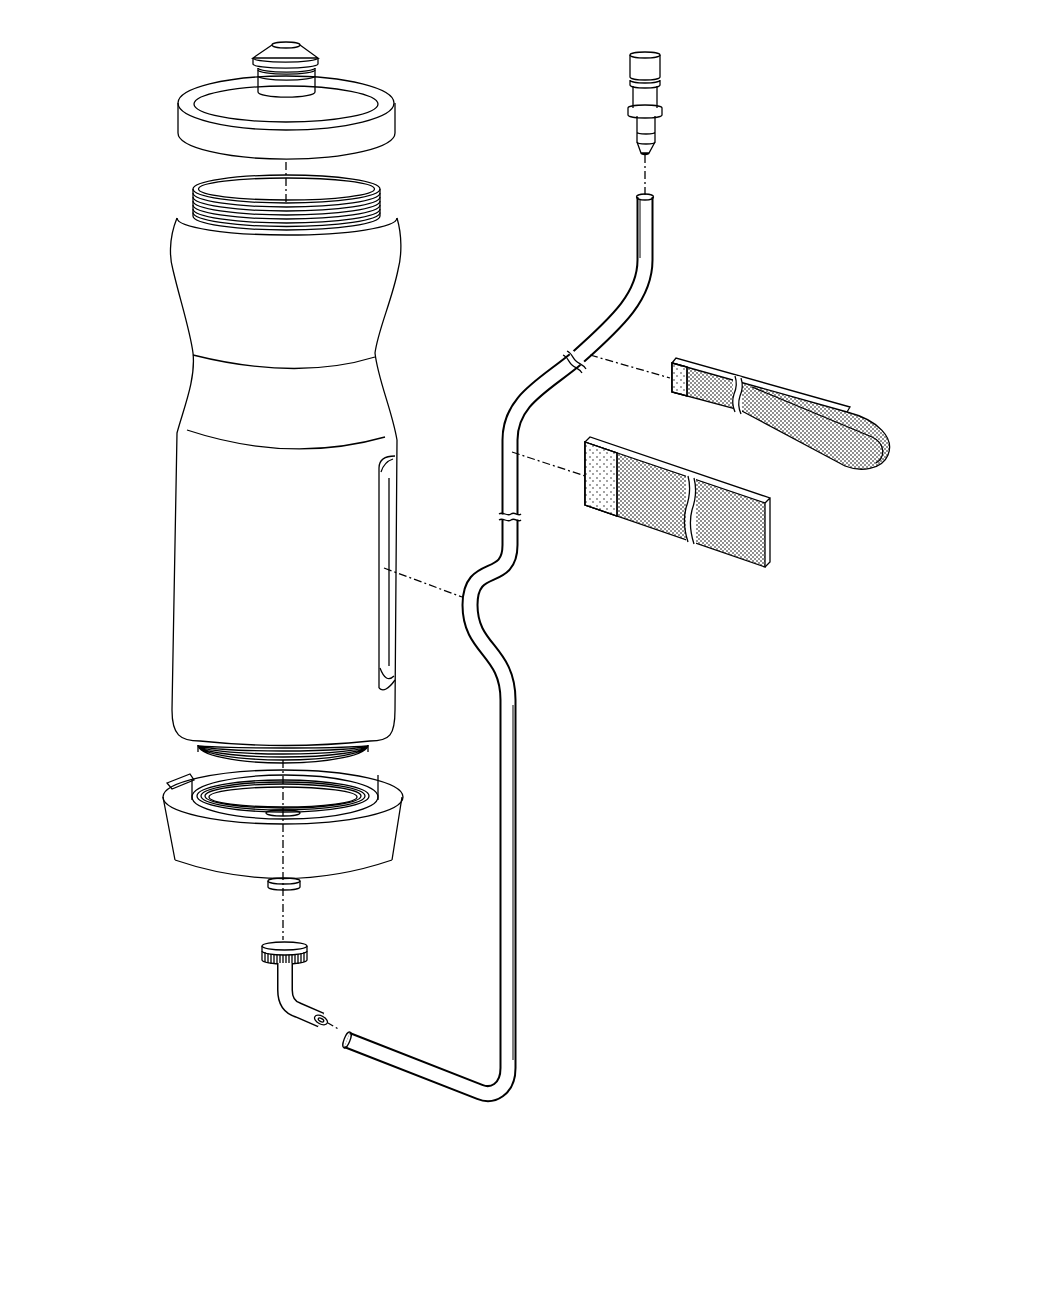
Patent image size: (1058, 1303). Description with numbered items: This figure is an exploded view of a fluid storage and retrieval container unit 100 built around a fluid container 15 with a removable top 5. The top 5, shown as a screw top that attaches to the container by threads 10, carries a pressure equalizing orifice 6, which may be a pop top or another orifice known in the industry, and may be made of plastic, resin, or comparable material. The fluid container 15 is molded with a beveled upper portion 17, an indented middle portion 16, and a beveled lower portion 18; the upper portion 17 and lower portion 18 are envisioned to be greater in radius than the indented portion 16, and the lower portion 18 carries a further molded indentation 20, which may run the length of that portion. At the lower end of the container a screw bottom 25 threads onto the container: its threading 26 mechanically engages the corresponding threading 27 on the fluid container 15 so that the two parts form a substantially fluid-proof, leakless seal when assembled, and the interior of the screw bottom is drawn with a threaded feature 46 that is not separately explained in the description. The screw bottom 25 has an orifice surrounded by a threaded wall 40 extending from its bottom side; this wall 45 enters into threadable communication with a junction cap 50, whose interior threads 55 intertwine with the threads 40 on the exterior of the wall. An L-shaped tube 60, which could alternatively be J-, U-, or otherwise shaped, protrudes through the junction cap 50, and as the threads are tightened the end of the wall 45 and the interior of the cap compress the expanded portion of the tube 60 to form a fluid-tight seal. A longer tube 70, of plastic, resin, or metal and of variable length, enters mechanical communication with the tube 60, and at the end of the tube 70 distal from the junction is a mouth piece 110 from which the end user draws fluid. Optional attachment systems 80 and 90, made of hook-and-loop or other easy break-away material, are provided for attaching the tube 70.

The fluid storage and retrieval container unit 100 is at (163, 80).
The pressure equalizing orifice 6 is at (305, 52).
The removable top 5 is at (388, 124).
The threads 10 is at (382, 196).
The fluid container 15 is at (136, 602).
The indented middle portion 16 is at (197, 355).
The beveled upper portion 17 is at (184, 248).
The beveled lower portion 18 is at (185, 520).
The molded indentation 20 is at (388, 557).
The screw bottom 25 is at (128, 826).
The threading 26 is at (190, 776).
The threading 27 is at (200, 745).
The threaded wall 40 is at (305, 885).
The wall 45 is at (276, 888).
The internal threads 46 is at (297, 812).
The junction cap 50 is at (262, 952).
The threads 55 is at (281, 942).
The tube 60 is at (295, 1012).
The tube 70 is at (518, 785).
The attachment system 80 is at (665, 470).
The attachment system 90 is at (723, 383).
The mouth piece 110 is at (657, 128).